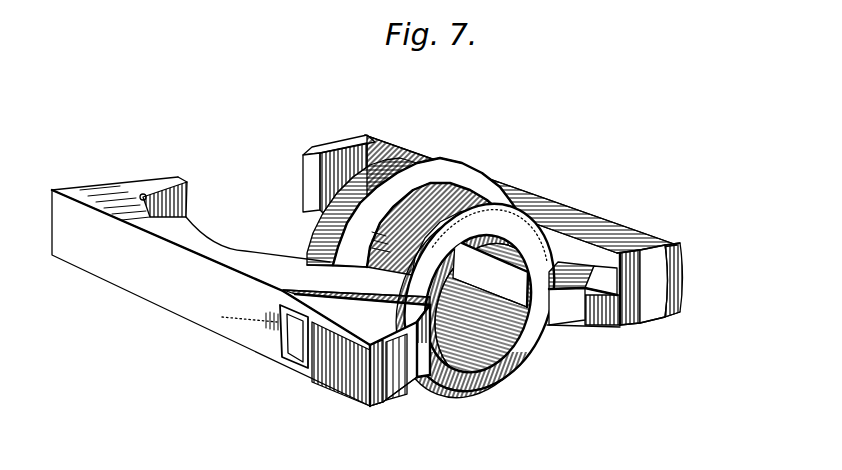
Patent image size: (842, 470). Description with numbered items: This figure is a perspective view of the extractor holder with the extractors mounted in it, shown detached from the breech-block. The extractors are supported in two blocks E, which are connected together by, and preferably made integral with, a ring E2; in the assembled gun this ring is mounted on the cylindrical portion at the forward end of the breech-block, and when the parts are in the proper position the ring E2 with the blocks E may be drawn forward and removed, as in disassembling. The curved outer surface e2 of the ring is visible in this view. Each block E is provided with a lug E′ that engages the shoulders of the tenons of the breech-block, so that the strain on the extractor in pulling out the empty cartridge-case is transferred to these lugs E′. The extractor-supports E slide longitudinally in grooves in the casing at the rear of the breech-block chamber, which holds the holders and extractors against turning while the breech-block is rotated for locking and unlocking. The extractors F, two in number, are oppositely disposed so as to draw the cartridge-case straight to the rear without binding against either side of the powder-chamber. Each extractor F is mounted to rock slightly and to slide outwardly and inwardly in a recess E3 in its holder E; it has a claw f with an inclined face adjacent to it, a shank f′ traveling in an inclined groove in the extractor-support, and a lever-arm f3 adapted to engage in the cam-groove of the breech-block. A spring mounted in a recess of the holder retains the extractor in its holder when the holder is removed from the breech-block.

The block E is at (200, 318).
The lug E′ is at (134, 180).
The ring E2 is at (477, 183).
The curved surface of collar e2 is at (430, 165).
The recess E3 is at (407, 392).
The extractor F is at (348, 297).
The shank f′ is at (300, 348).
The lever-arm f3 is at (463, 257).
The claw f is at (452, 248).